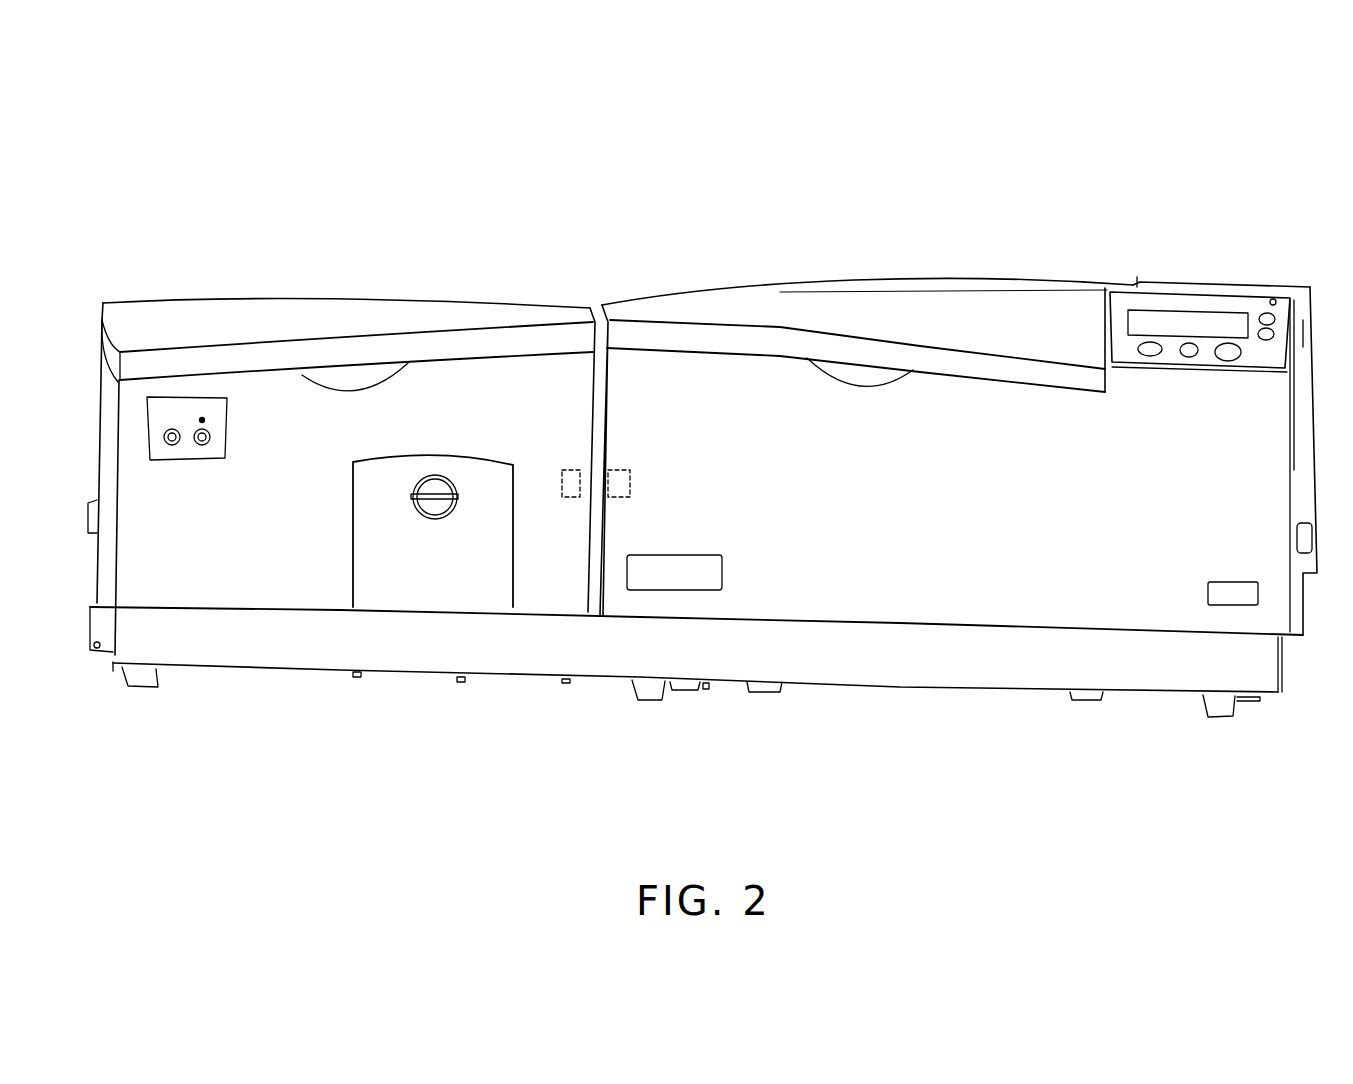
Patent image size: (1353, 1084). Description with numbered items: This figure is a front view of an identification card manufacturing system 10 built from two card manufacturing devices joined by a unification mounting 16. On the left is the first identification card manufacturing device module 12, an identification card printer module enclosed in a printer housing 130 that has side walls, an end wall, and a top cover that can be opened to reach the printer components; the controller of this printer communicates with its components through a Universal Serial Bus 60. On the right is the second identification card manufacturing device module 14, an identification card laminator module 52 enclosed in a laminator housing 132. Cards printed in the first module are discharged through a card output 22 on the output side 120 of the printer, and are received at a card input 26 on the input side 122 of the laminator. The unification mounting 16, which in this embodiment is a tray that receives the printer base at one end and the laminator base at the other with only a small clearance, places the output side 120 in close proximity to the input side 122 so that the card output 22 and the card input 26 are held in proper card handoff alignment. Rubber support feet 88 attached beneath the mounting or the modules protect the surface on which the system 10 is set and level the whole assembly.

The identification card manufacturing system 10 is at (1022, 126).
The first identification card manufacturing device module 12 is at (1007, 277).
The second identification card manufacturing device module 14 is at (317, 303).
The unification mounting 16 is at (972, 675).
The card output 22 is at (632, 485).
The card input 26 is at (568, 467).
The identification card laminator module 52 is at (415, 305).
The Universal Serial Bus 60 is at (1123, 277).
The support feet 88 is at (150, 680).
The output side 120 is at (610, 432).
The input side 122 is at (590, 398).
The printer housing 130 is at (888, 288).
The laminator housing 132 is at (200, 310).